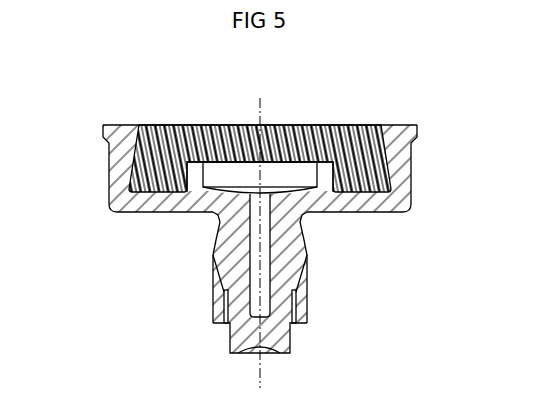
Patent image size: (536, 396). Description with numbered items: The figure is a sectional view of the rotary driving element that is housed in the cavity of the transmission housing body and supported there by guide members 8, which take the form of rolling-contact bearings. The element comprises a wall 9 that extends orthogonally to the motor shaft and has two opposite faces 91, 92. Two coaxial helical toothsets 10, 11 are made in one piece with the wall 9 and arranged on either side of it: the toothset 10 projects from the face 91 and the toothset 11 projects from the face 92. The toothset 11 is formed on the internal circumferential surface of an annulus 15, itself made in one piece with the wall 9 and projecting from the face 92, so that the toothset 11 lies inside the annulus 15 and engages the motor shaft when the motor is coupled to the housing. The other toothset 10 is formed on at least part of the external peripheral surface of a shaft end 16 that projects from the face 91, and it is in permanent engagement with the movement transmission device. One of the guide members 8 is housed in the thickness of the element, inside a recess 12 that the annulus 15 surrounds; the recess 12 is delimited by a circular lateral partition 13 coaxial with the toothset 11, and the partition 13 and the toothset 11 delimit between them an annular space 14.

The guide member 8 is at (216, 177).
The wall 9 is at (122, 211).
The helical toothset 10 is at (302, 285).
The helical toothset 11 is at (386, 138).
The recess 12 is at (313, 186).
The circular lateral partition 13 is at (322, 175).
The annular space 14 is at (157, 194).
The annulus 15 is at (110, 163).
The shaft end 16 is at (221, 317).
The face 91 is at (324, 213).
The face 92 is at (411, 200).